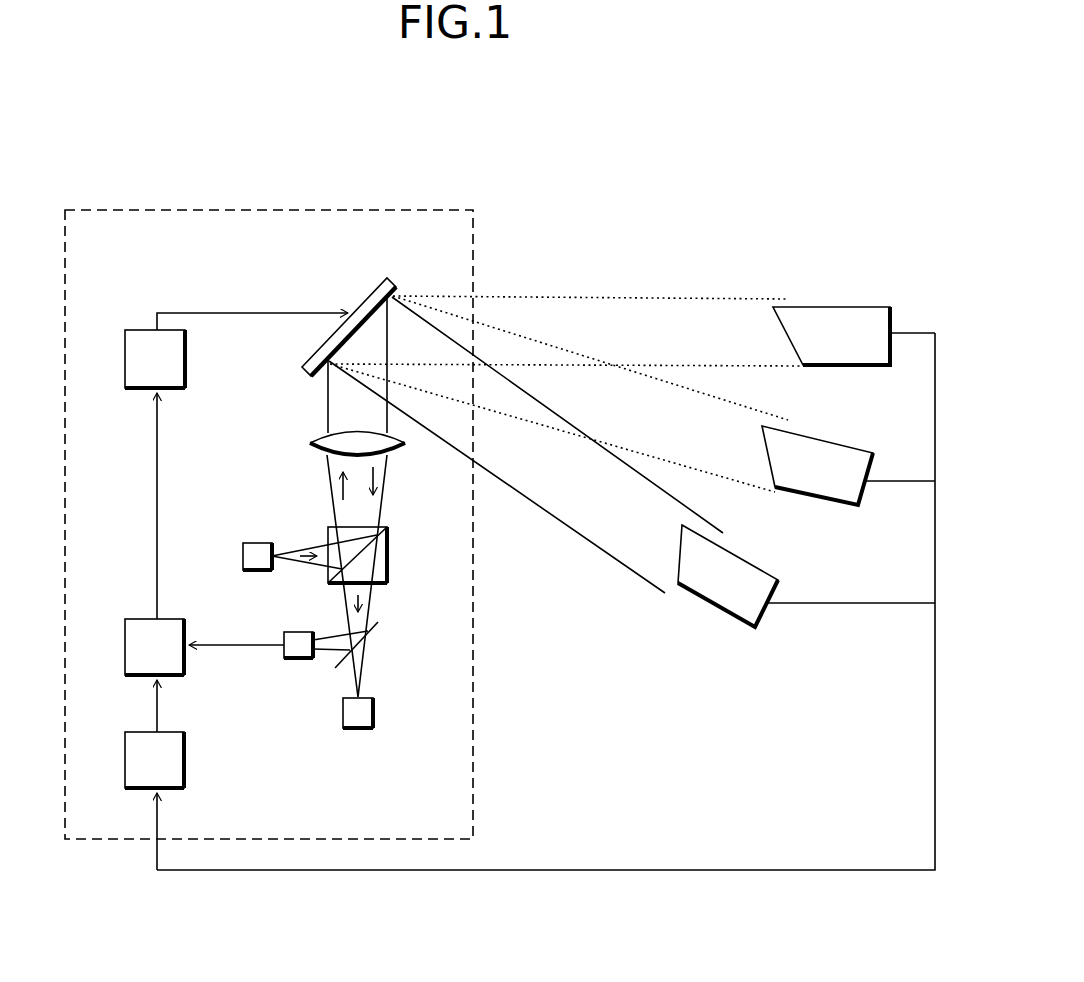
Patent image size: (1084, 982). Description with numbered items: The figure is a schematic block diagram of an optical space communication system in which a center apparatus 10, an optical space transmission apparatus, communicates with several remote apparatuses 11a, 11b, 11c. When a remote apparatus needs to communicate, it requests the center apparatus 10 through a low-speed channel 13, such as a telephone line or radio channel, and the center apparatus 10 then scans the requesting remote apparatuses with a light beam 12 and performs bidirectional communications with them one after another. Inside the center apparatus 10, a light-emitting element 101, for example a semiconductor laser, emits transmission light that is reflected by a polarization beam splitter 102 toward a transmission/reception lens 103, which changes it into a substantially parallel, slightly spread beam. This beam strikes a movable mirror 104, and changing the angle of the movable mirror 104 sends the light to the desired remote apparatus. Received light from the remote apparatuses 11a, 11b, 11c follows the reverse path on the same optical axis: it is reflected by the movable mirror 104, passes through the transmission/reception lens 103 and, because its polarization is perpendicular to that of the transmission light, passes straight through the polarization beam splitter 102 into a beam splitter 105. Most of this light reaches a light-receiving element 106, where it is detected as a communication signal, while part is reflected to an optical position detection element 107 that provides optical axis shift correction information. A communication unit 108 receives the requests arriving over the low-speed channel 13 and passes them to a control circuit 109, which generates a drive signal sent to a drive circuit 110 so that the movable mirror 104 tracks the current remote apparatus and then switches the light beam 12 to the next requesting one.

The center apparatus 10 is at (365, 210).
The remote apparatus 11a is at (738, 610).
The remote apparatus 11b is at (833, 490).
The remote apparatus 11c is at (838, 312).
The light beam 12 is at (614, 548).
The low-speed channel 13 is at (608, 872).
The light-emitting element 101 is at (255, 548).
The polarization beam splitter 102 is at (400, 558).
The transmission/reception lens 103 is at (400, 447).
The movable mirror 104 is at (372, 297).
The beam splitter 105 is at (380, 630).
The light-receiving element 106 is at (357, 728).
The optical position detection element 107 is at (293, 658).
The communication unit 108 is at (130, 752).
The control circuit 109 is at (133, 620).
The drive circuit 110 is at (138, 332).